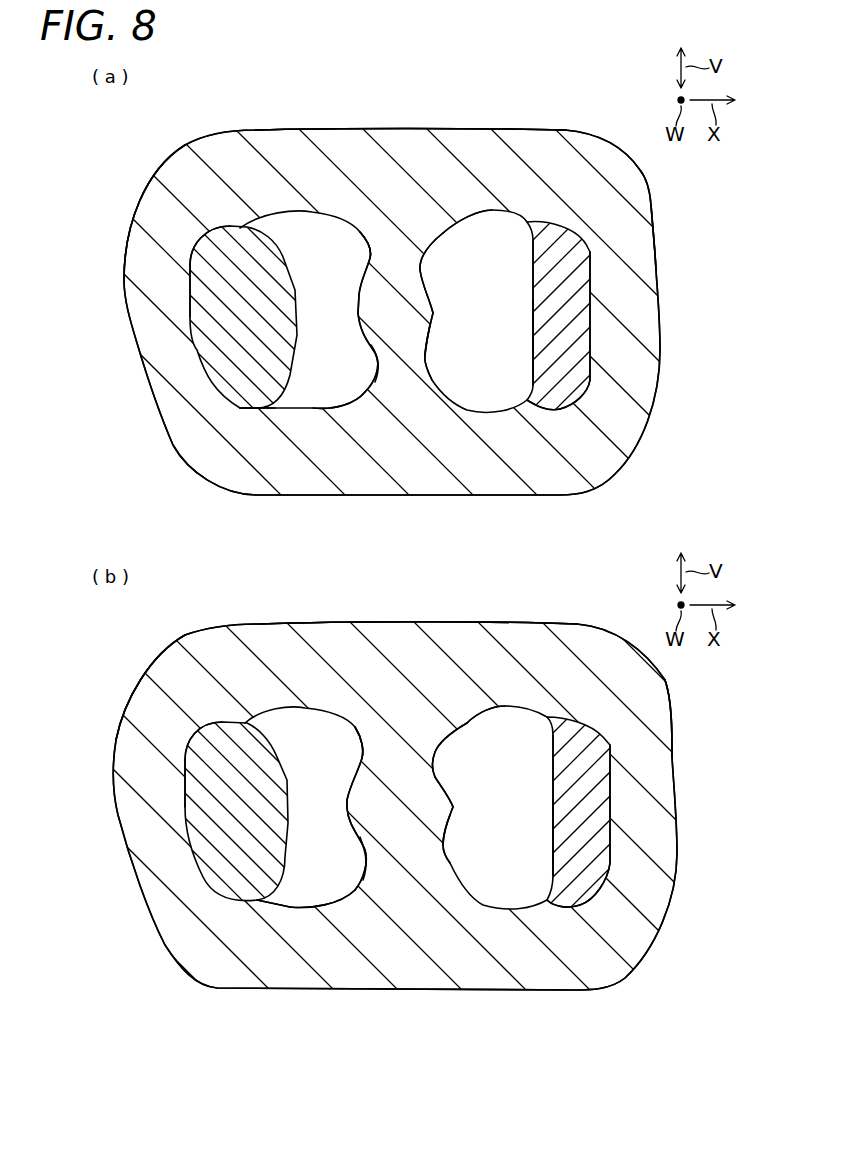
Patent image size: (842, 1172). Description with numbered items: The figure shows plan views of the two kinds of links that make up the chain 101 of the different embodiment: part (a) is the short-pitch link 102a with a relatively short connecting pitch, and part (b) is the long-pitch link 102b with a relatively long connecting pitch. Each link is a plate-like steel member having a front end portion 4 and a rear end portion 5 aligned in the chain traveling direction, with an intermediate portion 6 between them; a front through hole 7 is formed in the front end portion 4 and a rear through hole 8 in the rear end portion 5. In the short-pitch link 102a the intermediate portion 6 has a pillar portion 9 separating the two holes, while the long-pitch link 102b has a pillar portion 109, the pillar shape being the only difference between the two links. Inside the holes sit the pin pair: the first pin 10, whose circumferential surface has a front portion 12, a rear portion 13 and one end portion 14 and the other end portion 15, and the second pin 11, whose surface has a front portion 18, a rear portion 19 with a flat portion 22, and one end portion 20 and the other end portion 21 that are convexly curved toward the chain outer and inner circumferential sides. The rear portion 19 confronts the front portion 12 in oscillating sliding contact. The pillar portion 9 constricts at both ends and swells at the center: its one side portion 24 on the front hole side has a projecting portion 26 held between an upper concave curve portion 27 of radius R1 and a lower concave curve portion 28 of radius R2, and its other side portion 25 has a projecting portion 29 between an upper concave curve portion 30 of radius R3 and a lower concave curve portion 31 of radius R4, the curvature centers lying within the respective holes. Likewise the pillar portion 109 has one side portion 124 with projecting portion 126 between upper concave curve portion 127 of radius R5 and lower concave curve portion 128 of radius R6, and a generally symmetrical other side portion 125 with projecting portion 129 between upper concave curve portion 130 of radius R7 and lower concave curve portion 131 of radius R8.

The front end portion 4 is at (640, 199).
The rear end portion 5 is at (176, 178).
The intermediate portion 6 is at (400, 150).
The front through hole 7 is at (488, 216).
The rear through hole 8 is at (293, 220).
The pillar portion 9 is at (397, 312).
The first pin 10 is at (220, 358).
The second pin 11 is at (578, 387).
The front portion 12 is at (297, 412).
The rear portion 13 is at (190, 290).
The one end portion 14 is at (217, 226).
The other end portion 15 is at (240, 402).
The front portion 18 is at (595, 300).
The rear portion 19 is at (537, 266).
The one end portion 20 is at (567, 218).
The other end portion 21 is at (564, 408).
The flat portion 22 is at (537, 354).
The one side portion 24 is at (453, 241).
The other side portion 25 is at (361, 239).
The projecting portion 26 is at (443, 317).
The upper concave curve portion 27 is at (428, 276).
The lower concave curve portion 28 is at (428, 350).
The projecting portion 29 is at (349, 317).
The upper concave curve portion 30 is at (359, 266).
The lower concave curve portion 31 is at (374, 360).
The radius of curvature R1 is at (449, 270).
The radius of curvature R2 is at (455, 355).
The radius of curvature R3 is at (353, 256).
The radius of curvature R4 is at (358, 364).
The radius of curvature R5 is at (455, 766).
The radius of curvature R6 is at (465, 850).
The radius of curvature R7 is at (345, 756).
The radius of curvature R8 is at (348, 856).
The chain 101 is at (621, 121).
The short-pitch link 102a is at (261, 119).
The long-pitch link 102b is at (266, 614).
The pillar portion 109 is at (395, 810).
The one side portion 124 is at (462, 739).
The other side portion 125 is at (346, 737).
The projecting portion 126 is at (462, 812).
The upper concave curve portion 127 is at (438, 777).
The lower concave curve portion 128 is at (444, 845).
The projecting portion 129 is at (340, 812).
The upper concave curve portion 130 is at (357, 767).
The lower concave curve portion 131 is at (362, 846).